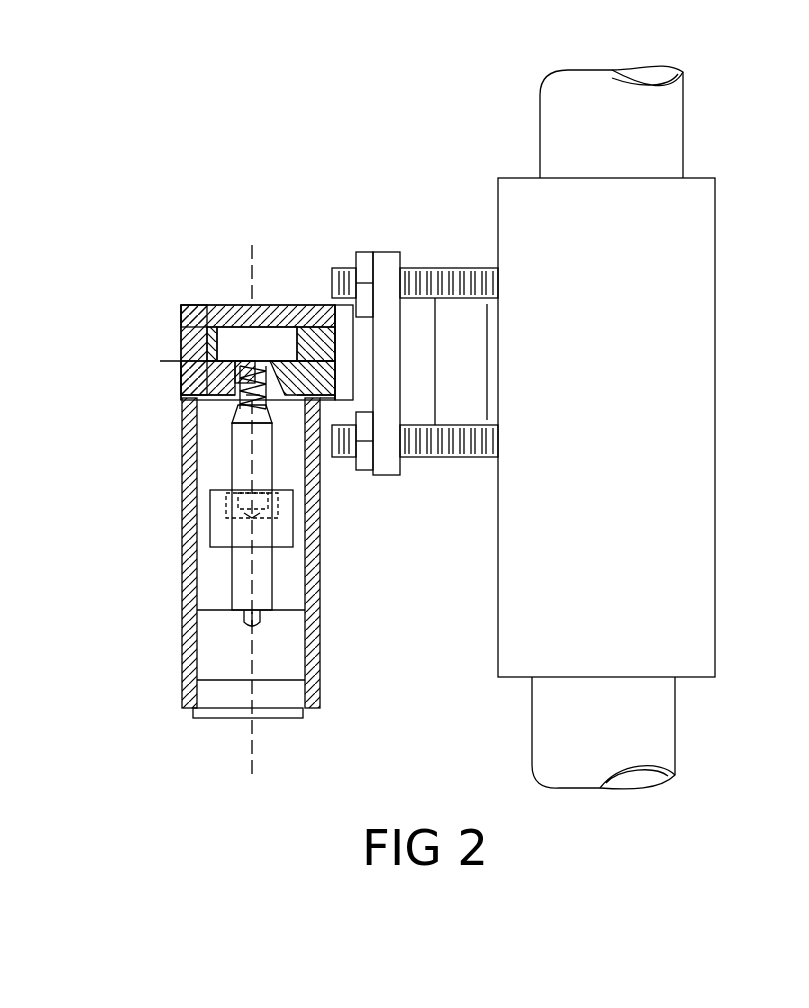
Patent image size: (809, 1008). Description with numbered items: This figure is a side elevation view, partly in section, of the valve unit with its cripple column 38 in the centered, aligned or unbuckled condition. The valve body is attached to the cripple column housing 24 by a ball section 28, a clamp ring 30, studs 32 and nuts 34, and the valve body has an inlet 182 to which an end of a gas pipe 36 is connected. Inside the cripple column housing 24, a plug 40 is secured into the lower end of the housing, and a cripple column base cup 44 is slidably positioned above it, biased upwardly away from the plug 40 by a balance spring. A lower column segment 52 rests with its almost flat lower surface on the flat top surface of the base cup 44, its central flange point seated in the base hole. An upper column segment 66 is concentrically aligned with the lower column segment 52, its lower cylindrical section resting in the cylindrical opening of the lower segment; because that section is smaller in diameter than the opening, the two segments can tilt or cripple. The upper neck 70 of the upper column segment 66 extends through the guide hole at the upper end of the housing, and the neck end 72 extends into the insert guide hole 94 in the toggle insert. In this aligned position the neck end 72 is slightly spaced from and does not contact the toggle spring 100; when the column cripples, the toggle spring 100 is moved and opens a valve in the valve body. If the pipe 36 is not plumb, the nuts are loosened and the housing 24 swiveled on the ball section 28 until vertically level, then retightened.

The cripple column housing 24 is at (183, 652).
The ball section 28 is at (452, 415).
The clamp ring 30 is at (384, 252).
The studs 32 is at (449, 268).
The nuts 34 is at (362, 252).
The gas pipe 36 is at (672, 727).
The cripple column 38 is at (212, 568).
The plug 40 is at (210, 712).
The cripple column base cup 44 is at (295, 641).
The lower column segment 52 is at (285, 540).
The upper column segment 66 is at (270, 476).
The upper neck 70 is at (415, 357).
The neck end 72 is at (255, 393).
The insert guide hole 94 is at (200, 361).
The toggle spring 100 is at (256, 388).
The inlet 182 is at (529, 677).